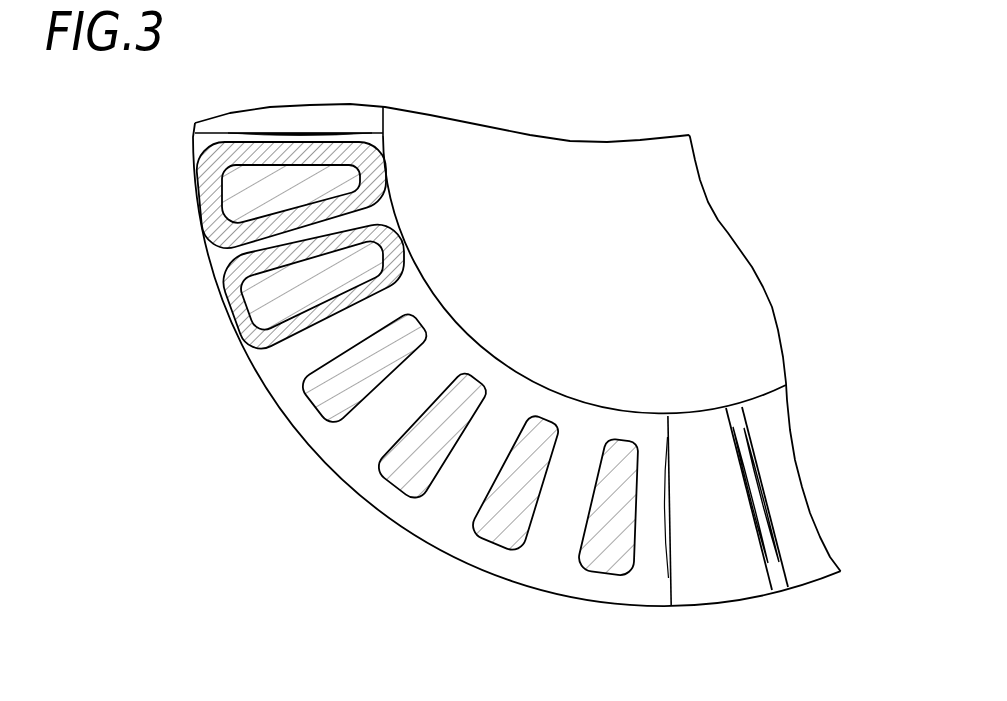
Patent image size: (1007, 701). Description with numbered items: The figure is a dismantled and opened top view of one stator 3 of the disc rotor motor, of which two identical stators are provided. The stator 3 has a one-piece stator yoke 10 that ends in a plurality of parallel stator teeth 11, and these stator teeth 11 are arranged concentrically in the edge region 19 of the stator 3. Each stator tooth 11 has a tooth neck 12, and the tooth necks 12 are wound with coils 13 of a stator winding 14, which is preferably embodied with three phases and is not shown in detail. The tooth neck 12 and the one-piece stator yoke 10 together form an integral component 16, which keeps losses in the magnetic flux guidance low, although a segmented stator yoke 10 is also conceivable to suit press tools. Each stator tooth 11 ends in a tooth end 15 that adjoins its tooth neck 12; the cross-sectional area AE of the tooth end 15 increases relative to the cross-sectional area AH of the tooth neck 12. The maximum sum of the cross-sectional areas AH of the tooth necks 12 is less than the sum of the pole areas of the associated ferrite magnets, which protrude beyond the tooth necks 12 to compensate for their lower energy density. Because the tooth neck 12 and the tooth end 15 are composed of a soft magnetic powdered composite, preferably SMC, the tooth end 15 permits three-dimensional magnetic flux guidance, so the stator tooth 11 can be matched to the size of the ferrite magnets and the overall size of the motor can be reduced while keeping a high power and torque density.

The stator 3 is at (745, 132).
The stator yoke 10 is at (583, 438).
The stator teeth 11 is at (382, 482).
The tooth neck 12 is at (320, 285).
The coils 13 is at (342, 157).
The stator winding 14 is at (222, 250).
The tooth end 15 is at (712, 490).
The integral component 16 is at (728, 232).
The edge region 19 is at (303, 360).
The cross-sectional area of the tooth neck AH is at (508, 503).
The cross-sectional area of the tooth end AE is at (712, 545).